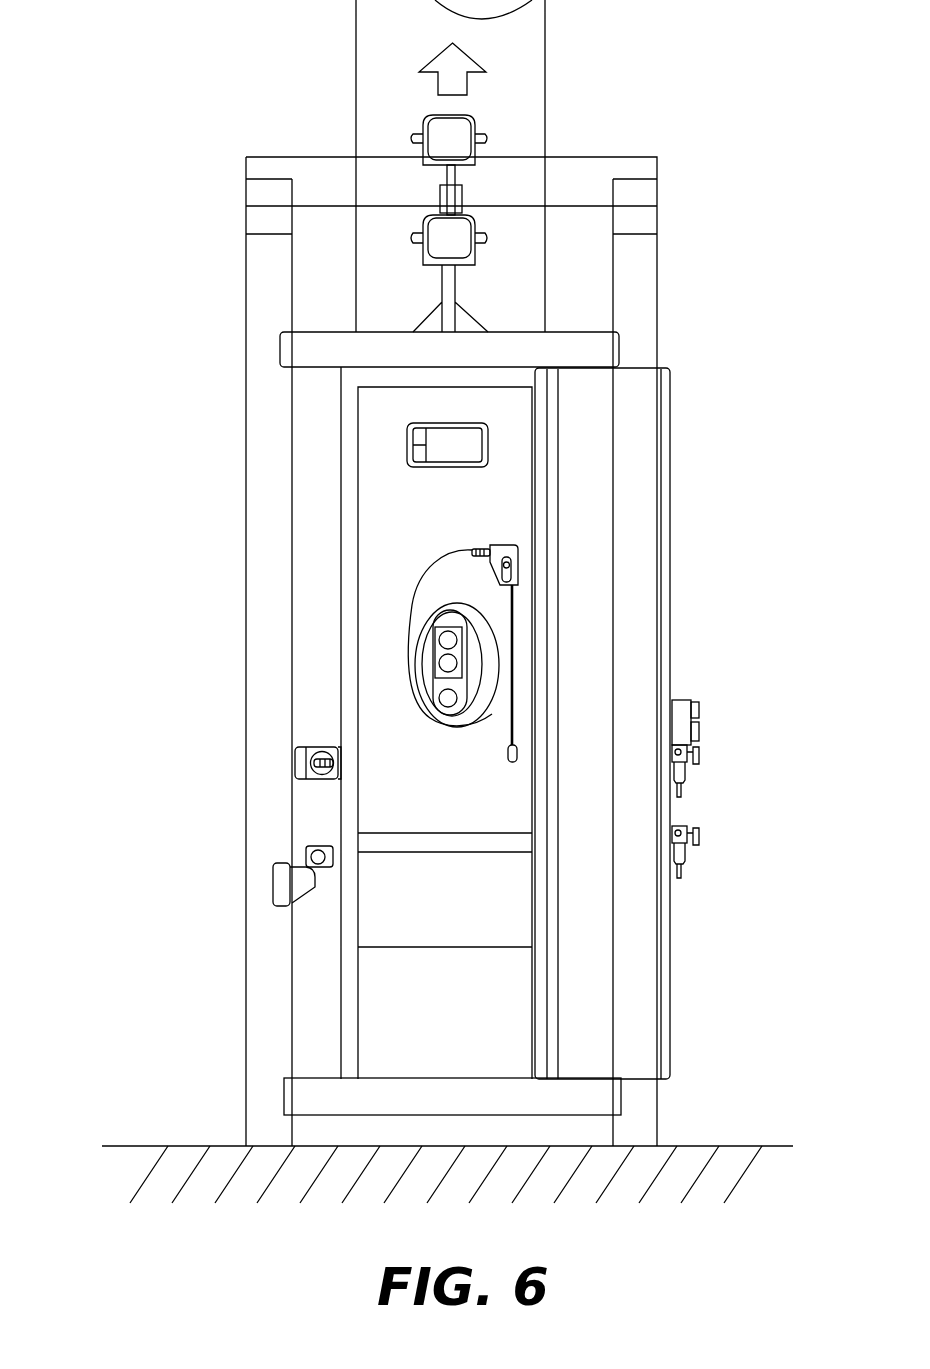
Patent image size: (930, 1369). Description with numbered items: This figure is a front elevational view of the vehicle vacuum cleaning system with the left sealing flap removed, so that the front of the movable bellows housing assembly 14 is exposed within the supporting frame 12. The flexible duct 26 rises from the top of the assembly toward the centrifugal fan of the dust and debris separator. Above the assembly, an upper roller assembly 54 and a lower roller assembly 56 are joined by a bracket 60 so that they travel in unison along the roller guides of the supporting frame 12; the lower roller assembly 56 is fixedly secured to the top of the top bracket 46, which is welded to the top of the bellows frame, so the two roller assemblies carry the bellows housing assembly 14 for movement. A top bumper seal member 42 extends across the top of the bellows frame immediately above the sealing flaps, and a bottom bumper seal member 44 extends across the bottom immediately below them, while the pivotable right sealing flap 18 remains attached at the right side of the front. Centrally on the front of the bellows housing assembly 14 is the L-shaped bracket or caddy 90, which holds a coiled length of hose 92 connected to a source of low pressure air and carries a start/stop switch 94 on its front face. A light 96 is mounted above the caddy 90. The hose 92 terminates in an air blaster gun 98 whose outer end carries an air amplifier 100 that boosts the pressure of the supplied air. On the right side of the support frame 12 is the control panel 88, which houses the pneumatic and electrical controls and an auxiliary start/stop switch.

The supporting frame 12 is at (247, 603).
The flexible duct 26 is at (545, 30).
The upper roller assembly 54 is at (430, 115).
The bracket 60 is at (457, 172).
The lower roller assembly 56 is at (447, 233).
The top bracket 46 is at (462, 308).
The top bumper seal member 42 is at (607, 352).
The bellows housing assembly 14 is at (459, 517).
The right sealing flap 18 is at (625, 517).
The light 96 is at (472, 447).
The hose 92 is at (412, 590).
The L-shaped bracket or caddy 90 is at (442, 685).
The start/stop switch 94 is at (430, 653).
The air blaster gun 98 is at (517, 645).
The air amplifier 100 is at (517, 748).
The control panel 88 is at (685, 793).
The bottom bumper seal member 44 is at (621, 1097).